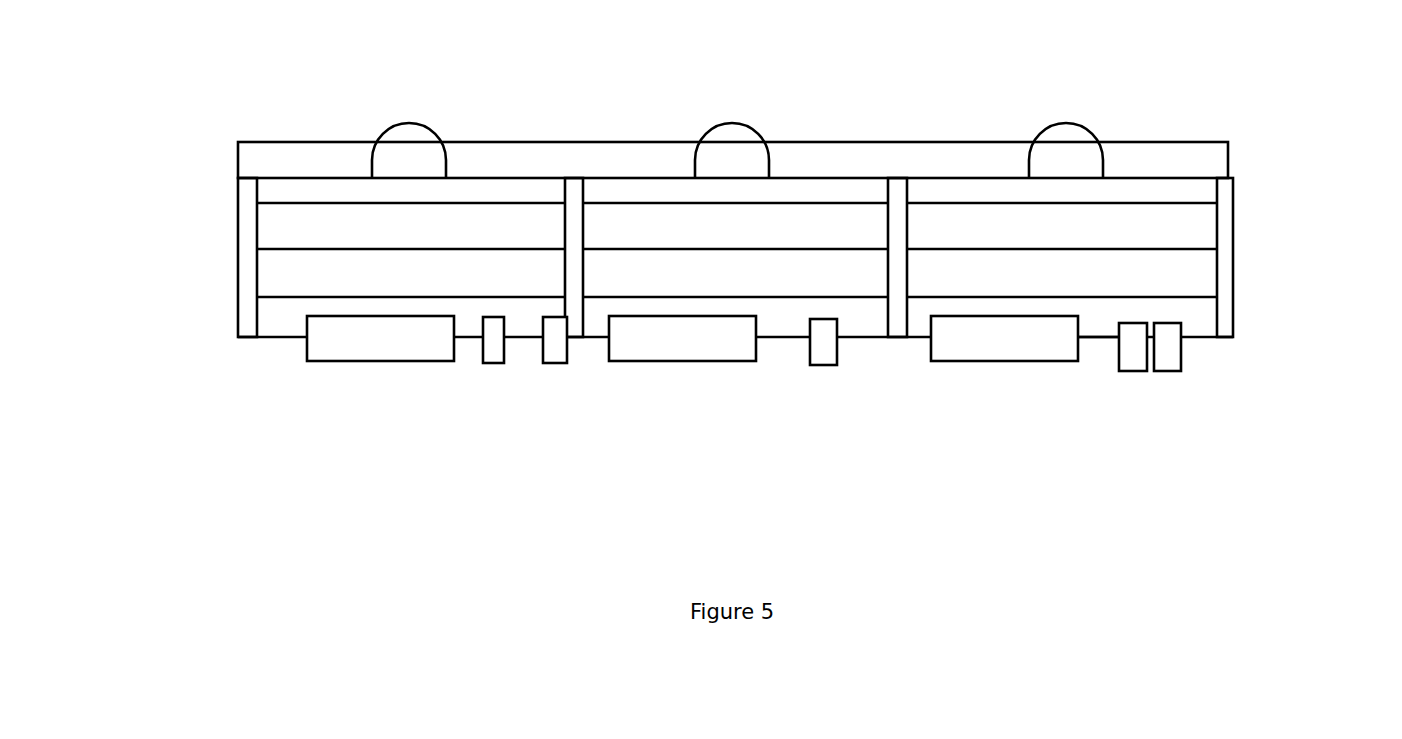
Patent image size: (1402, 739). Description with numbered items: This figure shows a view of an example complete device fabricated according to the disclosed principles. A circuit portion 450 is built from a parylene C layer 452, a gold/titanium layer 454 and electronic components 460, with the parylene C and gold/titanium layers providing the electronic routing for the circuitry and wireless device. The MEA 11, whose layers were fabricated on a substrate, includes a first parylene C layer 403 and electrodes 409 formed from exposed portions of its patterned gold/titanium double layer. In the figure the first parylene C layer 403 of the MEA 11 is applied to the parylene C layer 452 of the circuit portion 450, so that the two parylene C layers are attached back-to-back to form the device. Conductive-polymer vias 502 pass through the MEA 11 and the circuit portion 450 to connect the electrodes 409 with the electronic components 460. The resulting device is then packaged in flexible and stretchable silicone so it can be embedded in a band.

The MEA 11 is at (1252, 148).
The first parylene C layer 403 is at (1192, 225).
The electrodes 409 is at (387, 128).
The circuit portion 450 is at (1228, 347).
The parylene C layer 452 is at (1188, 278).
The gold/titanium layer 454 is at (1098, 321).
The electronic components 460 is at (1000, 381).
The conductive-polymer vias 502 is at (566, 269).